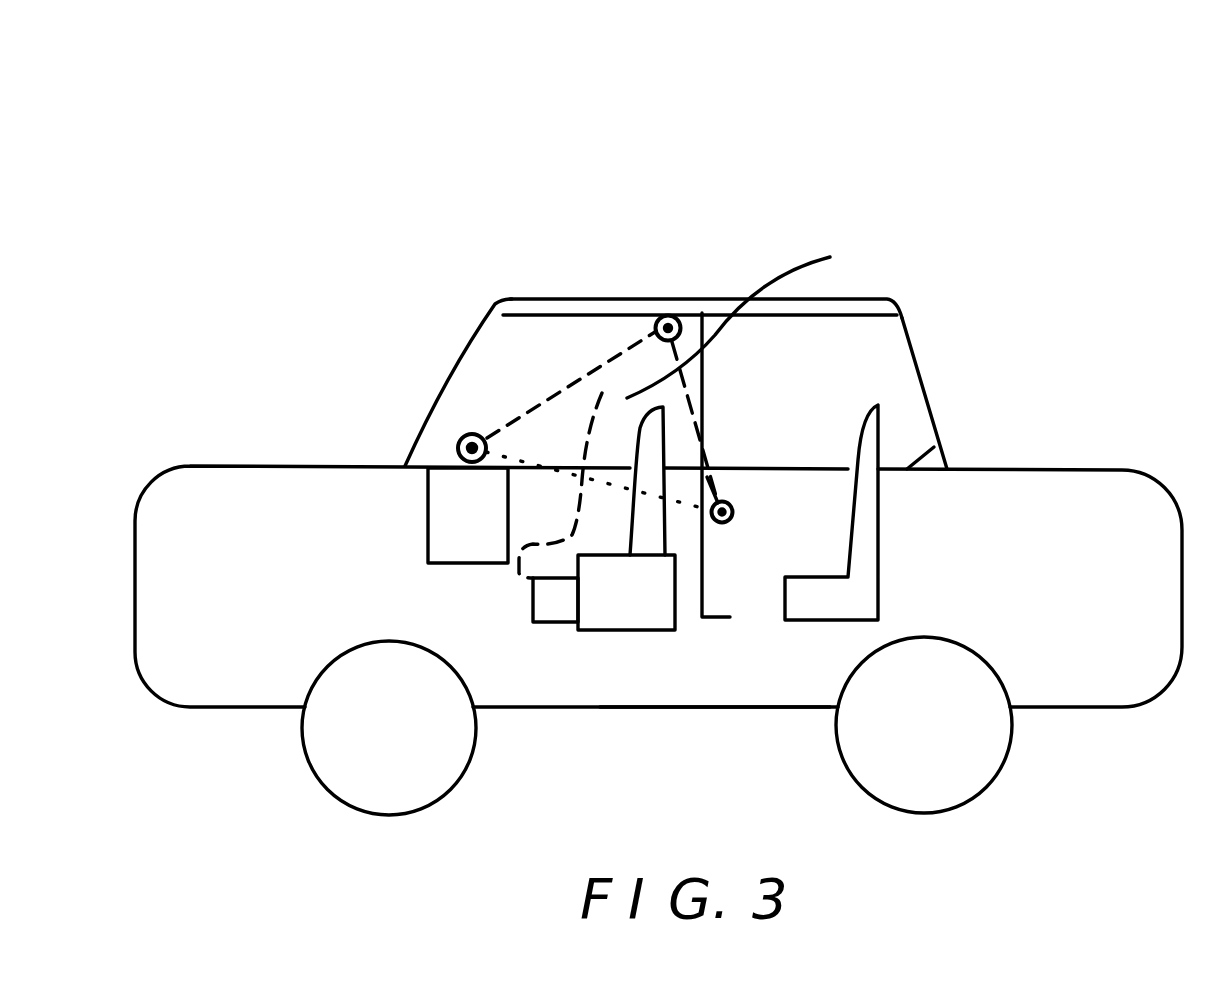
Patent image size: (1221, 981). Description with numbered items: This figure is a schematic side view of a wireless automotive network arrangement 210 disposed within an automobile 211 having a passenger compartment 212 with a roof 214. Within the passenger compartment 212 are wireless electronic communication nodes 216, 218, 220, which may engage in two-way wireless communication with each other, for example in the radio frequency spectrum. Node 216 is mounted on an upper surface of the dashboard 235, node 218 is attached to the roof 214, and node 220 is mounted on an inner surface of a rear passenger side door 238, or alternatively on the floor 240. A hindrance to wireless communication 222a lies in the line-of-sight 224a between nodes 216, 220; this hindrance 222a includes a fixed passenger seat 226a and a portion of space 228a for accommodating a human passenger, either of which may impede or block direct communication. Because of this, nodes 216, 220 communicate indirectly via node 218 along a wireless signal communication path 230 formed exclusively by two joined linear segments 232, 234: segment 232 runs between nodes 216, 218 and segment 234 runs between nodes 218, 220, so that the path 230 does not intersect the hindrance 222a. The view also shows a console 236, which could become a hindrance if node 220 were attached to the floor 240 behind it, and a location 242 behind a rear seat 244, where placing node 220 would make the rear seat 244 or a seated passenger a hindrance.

The wireless automotive network arrangement 210 is at (1066, 150).
The automobile 211 is at (183, 465).
The passenger compartment 212 is at (900, 400).
The roof 214 is at (887, 300).
The wireless electronic communication node 216 is at (460, 441).
The wireless electronic communication node 218 is at (671, 316).
The wireless electronic communication node 220 is at (724, 522).
The hindrance to wireless communication 222a is at (488, 605).
The line-of-sight 224a is at (512, 457).
The fixed passenger seat 226a is at (560, 623).
The portion of space 228a is at (786, 317).
The wireless signal communication path 230 is at (513, 420).
The linear segment 232 is at (613, 360).
The linear segment 234 is at (702, 410).
The dashboard 235 is at (496, 541).
The console 236 is at (598, 614).
The rear passenger side door 238 is at (733, 593).
The floor 240 is at (800, 710).
The location 242 is at (936, 445).
The rear seat 244 is at (870, 538).